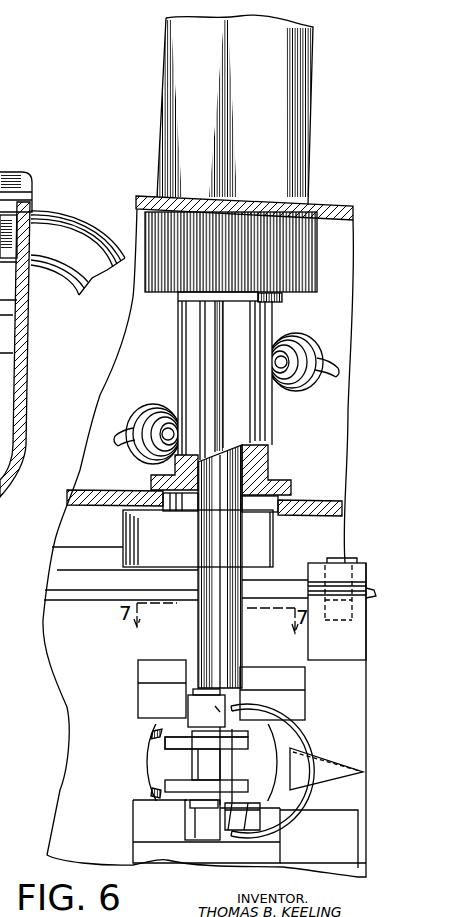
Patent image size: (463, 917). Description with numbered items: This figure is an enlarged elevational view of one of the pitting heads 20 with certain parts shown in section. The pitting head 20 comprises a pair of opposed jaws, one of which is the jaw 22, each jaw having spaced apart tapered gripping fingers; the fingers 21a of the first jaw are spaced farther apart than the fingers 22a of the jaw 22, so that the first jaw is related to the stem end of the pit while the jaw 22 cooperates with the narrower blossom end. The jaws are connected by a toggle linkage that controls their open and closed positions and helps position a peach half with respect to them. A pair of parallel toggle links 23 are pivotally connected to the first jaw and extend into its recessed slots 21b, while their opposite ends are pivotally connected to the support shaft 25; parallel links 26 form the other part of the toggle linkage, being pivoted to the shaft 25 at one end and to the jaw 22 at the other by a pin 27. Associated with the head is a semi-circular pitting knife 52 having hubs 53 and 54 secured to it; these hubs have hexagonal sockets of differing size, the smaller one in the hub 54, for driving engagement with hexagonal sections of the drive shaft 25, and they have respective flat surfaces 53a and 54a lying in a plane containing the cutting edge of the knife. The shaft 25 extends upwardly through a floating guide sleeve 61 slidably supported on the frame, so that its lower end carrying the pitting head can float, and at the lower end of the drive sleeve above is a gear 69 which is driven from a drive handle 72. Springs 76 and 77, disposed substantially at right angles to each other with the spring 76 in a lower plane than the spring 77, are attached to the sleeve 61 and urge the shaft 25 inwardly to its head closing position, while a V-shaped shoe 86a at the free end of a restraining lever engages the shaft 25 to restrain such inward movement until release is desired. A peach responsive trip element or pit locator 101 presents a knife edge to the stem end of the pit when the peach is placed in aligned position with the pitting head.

The pitting head 20 is at (108, 834).
The tapered gripping fingers 21a is at (249, 819).
The recessed slots 21b is at (236, 761).
The jaw 22 is at (148, 772).
The tapered gripping fingers 22a is at (152, 796).
The toggle links 23 is at (250, 743).
The support shaft 25 is at (198, 628).
The links 26 is at (165, 752).
The pin 27 is at (175, 733).
The knife 52 is at (299, 736).
The hub 53 is at (190, 716).
The flat surface 53a is at (218, 710).
The hub 54 is at (186, 828).
The flat surface 54a is at (203, 828).
The floating guide sleeve 61 is at (235, 402).
The gear 69 is at (167, 297).
The drive handle 72 is at (78, 253).
The spring 76 is at (166, 408).
The spring 77 is at (318, 324).
The V-shaped shoe 86a is at (173, 562).
The trip element 101 is at (346, 789).